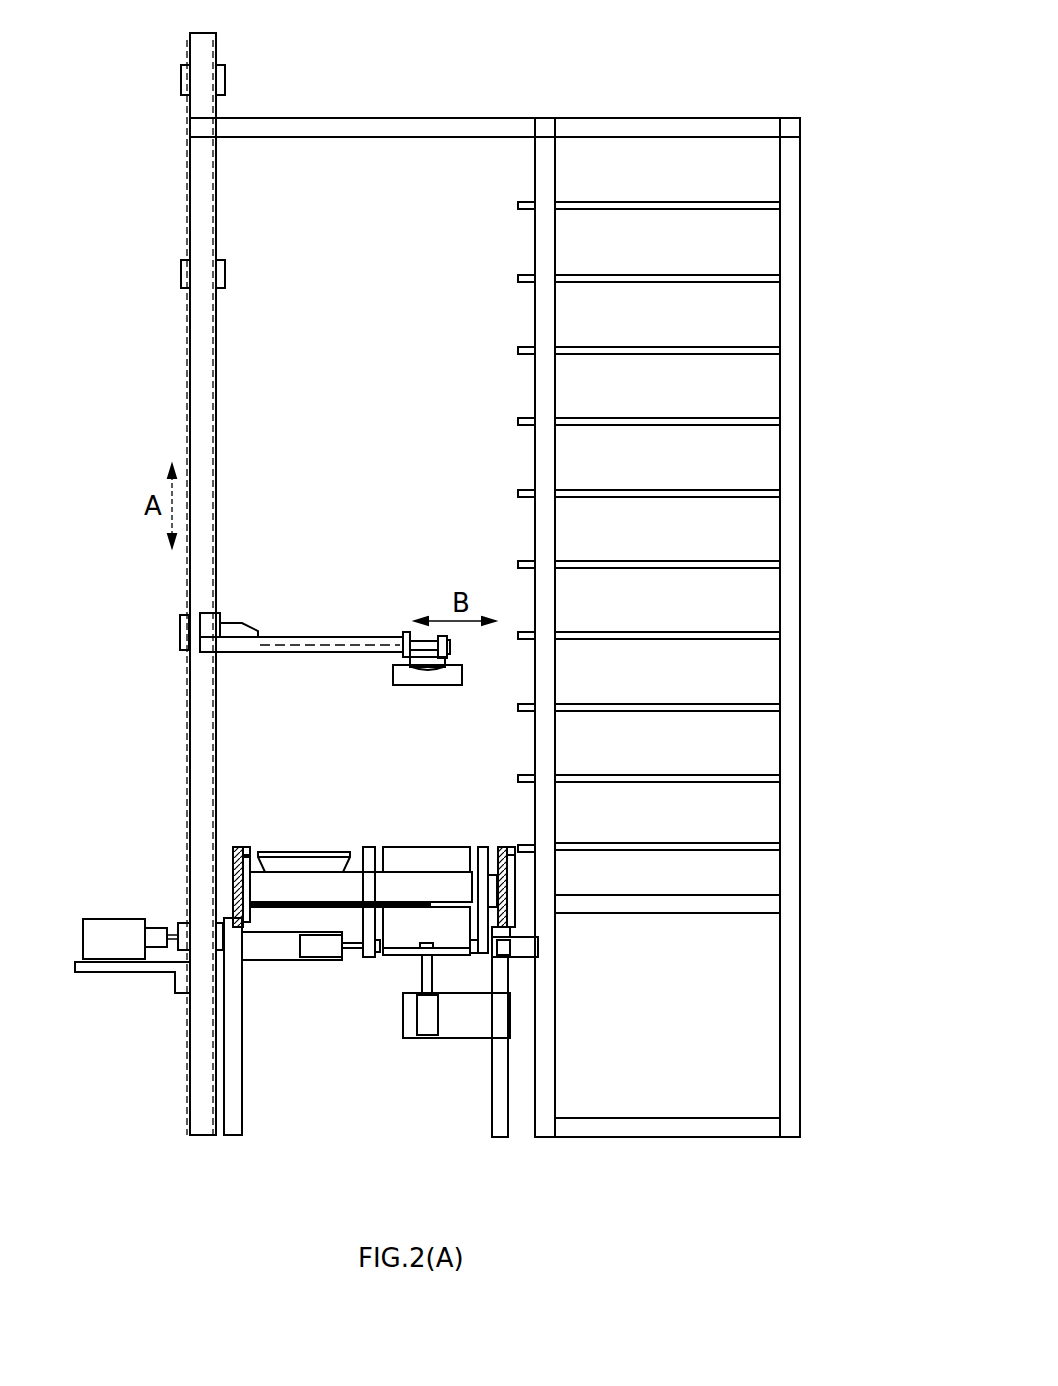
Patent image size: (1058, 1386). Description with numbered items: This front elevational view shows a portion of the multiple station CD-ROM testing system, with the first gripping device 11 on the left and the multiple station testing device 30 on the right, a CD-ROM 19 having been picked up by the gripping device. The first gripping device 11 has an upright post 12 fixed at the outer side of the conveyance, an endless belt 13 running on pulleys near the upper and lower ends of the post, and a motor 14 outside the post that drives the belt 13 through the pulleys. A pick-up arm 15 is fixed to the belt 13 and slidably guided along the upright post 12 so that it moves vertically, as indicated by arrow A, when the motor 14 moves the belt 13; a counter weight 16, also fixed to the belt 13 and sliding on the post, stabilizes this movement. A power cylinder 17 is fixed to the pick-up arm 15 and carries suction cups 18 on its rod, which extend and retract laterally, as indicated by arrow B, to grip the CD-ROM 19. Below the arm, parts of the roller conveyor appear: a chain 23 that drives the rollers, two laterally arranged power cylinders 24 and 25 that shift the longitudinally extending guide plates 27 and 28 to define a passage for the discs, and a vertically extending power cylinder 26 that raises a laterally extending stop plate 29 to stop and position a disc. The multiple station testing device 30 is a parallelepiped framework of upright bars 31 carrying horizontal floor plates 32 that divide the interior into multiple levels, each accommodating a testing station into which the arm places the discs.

The first gripping device 11 is at (172, 170).
The upright post 12 is at (203, 358).
The endless belt 13 is at (187, 425).
The motor 14 is at (125, 938).
The pick-up arm 15 is at (225, 614).
The counter weight 16 is at (183, 262).
The power cylinder 17 is at (225, 653).
The suction cups 18 is at (418, 666).
The CD-ROM 19 is at (432, 685).
The chain 23 is at (240, 870).
The power cylinder 24 is at (263, 955).
The power cylinder 25 is at (498, 957).
The vertically extending power cylinder 26 is at (432, 1012).
The longitudinally extending guide plate 27 is at (368, 955).
The longitudinally extending guide plate 28 is at (485, 852).
The stop plate 29 is at (395, 930).
The multiple station testing device 30 is at (815, 103).
The upright bar 31 is at (795, 385).
The horizontal floor plate 32 is at (720, 205).